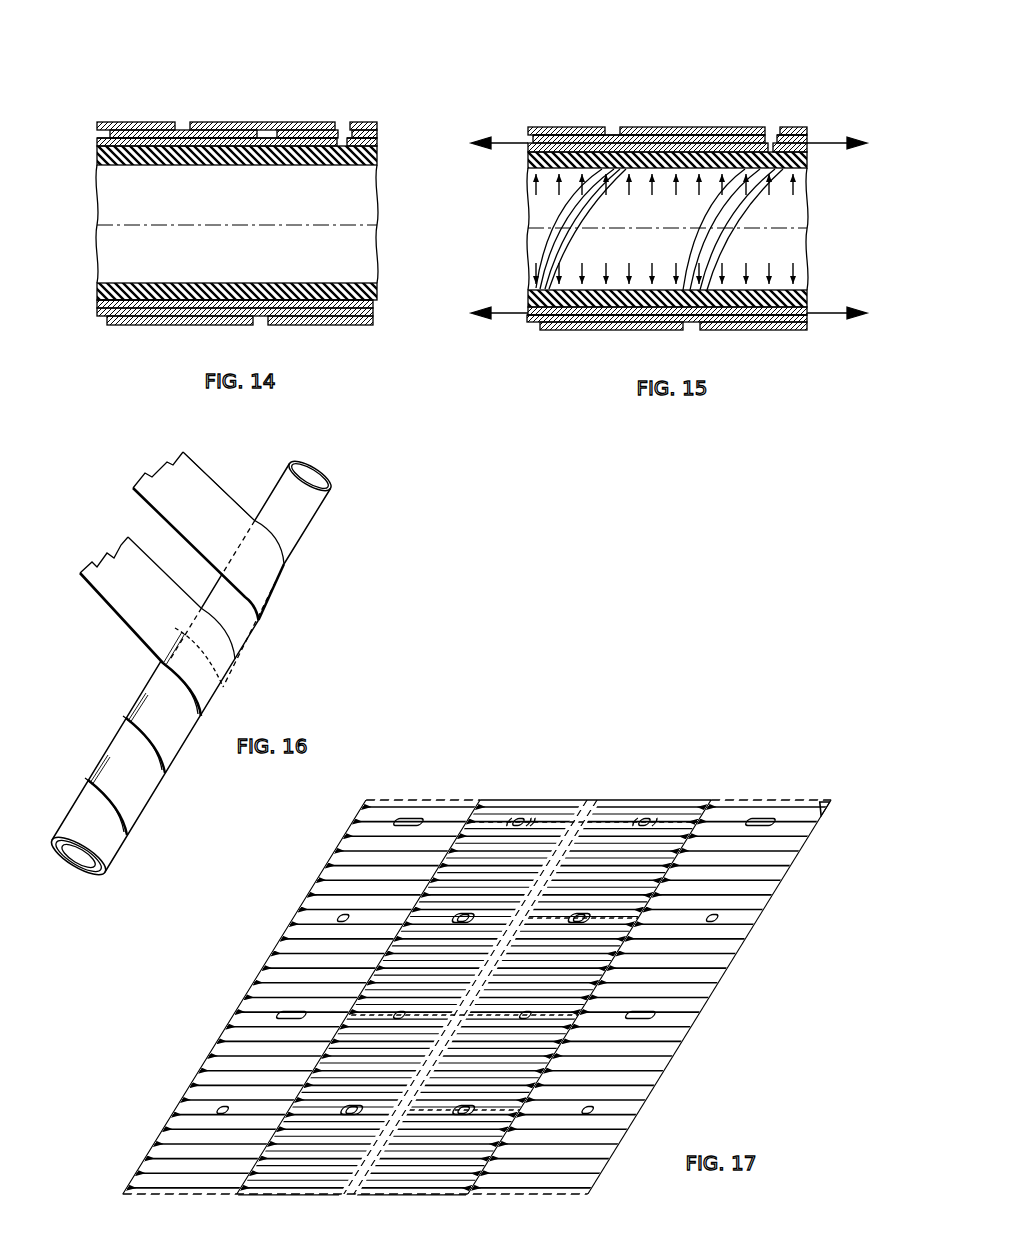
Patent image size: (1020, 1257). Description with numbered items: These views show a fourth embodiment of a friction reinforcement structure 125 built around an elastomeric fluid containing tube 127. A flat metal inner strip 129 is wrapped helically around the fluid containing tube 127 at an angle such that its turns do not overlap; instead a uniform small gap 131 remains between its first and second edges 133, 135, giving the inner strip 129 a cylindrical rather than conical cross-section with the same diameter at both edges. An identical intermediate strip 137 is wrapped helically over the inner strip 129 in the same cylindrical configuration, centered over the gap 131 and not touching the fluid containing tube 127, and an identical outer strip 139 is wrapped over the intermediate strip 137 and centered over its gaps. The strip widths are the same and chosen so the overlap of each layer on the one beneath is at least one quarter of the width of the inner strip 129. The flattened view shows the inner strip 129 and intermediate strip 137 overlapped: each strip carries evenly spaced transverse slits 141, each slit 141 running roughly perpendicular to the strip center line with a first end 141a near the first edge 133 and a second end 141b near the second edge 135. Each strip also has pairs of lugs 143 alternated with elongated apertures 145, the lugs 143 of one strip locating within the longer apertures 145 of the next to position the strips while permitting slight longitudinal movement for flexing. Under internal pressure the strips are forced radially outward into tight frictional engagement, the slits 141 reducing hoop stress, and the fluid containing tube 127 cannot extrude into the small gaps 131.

In FIG. 14, the friction reinforcement structure 125 is at (200, 124).
In FIG. 15, the friction reinforcement structure 125 is at (628, 128).
In FIG. 17, the friction reinforcement structure 125 is at (598, 731).
In FIG. 14, the fluid containing tube 127 is at (97, 153).
In FIG. 15, the fluid containing tube 127 is at (807, 163).
In FIG. 16, the fluid containing tube 127 is at (290, 510).
In FIG. 14, the inner strip 129 is at (368, 143).
In FIG. 15, the inner strip 129 is at (797, 142).
In FIG. 16, the inner strip 129 is at (188, 502).
In FIG. 17, the inner strip 129 is at (772, 809).
In FIG. 14, the gap 131 is at (340, 127).
In FIG. 15, the gap 131 is at (770, 135).
In FIG. 16, the gap 131 is at (187, 637).
In FIG. 17, the gap 131 is at (590, 811).
In FIG. 16, the first edge 133 is at (211, 476).
In FIG. 17, the first edge 133 is at (826, 811).
In FIG. 16, the second edge 135 is at (177, 533).
In FIG. 17, the second edge 135 is at (365, 808).
In FIG. 14, the intermediate strip 137 is at (363, 128).
In FIG. 15, the intermediate strip 137 is at (677, 137).
In FIG. 17, the intermediate strip 137 is at (634, 804).
In FIG. 14, the outer strip 139 is at (333, 122).
In FIG. 15, the outer strip 139 is at (665, 127).
In FIG. 17, the transverse slit 141 is at (662, 828).
In FIG. 17, the first end 141a is at (822, 815).
In FIG. 17, the second end 141b is at (480, 804).
In FIG. 17, the lugs 143 is at (719, 922).
In FIG. 17, the elongated aperture 145 is at (767, 828).